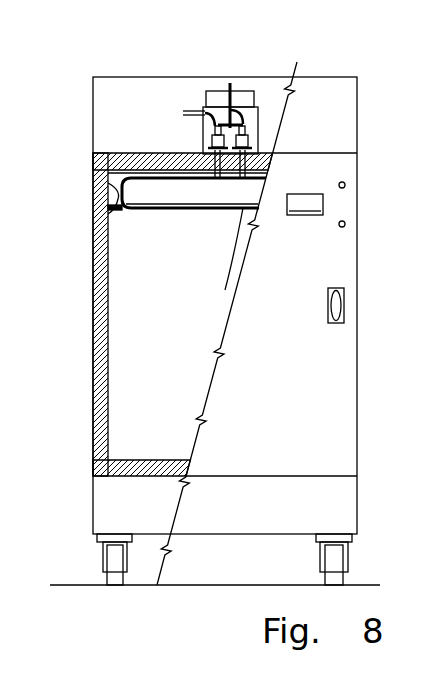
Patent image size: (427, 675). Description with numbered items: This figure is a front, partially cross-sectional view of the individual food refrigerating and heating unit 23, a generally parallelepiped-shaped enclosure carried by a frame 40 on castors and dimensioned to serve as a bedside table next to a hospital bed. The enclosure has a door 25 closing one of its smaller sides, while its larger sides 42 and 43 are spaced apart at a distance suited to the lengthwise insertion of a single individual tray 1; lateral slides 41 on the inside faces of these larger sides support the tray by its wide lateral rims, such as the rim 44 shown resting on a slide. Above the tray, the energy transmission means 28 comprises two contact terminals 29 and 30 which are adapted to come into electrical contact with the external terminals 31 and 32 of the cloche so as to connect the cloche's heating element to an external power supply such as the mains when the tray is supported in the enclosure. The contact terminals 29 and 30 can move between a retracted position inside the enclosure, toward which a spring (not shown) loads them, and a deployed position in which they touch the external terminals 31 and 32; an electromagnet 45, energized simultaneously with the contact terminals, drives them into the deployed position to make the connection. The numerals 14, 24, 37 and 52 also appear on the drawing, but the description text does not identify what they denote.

The individual tray 1 is at (153, 213).
The housing part 14 is at (419, 392).
The individual food refrigerating and heating unit 23 is at (419, 15).
The housing element 24 is at (419, 248).
The door 25 is at (323, 412).
The energy transmission means 28 is at (258, 84).
The contact terminal 29 is at (210, 138).
The contact terminal 30 is at (250, 135).
The external terminal 31 is at (212, 208).
The external terminal 32 is at (225, 290).
The base 37 is at (419, 495).
The frame 40 is at (112, 578).
The lateral slide 41 is at (108, 231).
The larger side 42 is at (93, 376).
The larger side 43 is at (357, 232).
The rim 44 is at (108, 184).
The electromagnet 45 is at (243, 97).
The display 52 is at (357, 182).